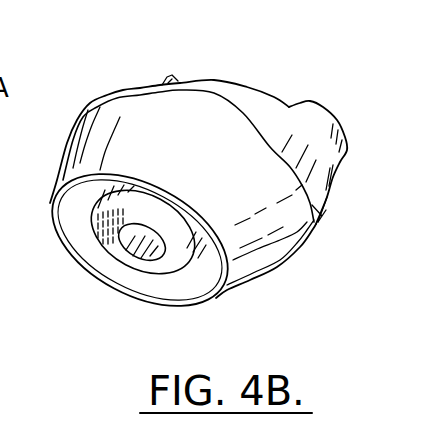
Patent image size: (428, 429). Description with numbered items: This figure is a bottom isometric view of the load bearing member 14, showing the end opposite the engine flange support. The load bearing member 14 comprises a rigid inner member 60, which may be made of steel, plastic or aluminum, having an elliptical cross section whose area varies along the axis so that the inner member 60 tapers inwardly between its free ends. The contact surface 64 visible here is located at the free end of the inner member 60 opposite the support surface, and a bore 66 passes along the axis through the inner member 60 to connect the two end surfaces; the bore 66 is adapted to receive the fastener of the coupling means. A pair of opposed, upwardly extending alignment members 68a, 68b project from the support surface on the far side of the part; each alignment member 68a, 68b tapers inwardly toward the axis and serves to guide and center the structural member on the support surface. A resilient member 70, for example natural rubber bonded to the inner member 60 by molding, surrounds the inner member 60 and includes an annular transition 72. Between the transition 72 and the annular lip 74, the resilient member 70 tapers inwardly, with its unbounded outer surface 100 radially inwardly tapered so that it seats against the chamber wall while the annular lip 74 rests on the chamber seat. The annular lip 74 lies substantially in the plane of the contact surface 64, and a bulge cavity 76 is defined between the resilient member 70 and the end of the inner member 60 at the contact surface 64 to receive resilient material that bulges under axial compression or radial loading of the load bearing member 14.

The load bearing member 14 is at (284, 66).
The inner member 60 is at (88, 248).
The contact surface 64 is at (172, 263).
The bore 66 is at (140, 248).
The alignment member 68a is at (169, 77).
The alignment member 68b is at (322, 116).
The resilient member 70 is at (83, 86).
The annular transition 72 is at (318, 220).
The annular lip 74 is at (50, 200).
The bulge cavity 76 is at (204, 290).
The unbounded outer surface 100 is at (272, 267).